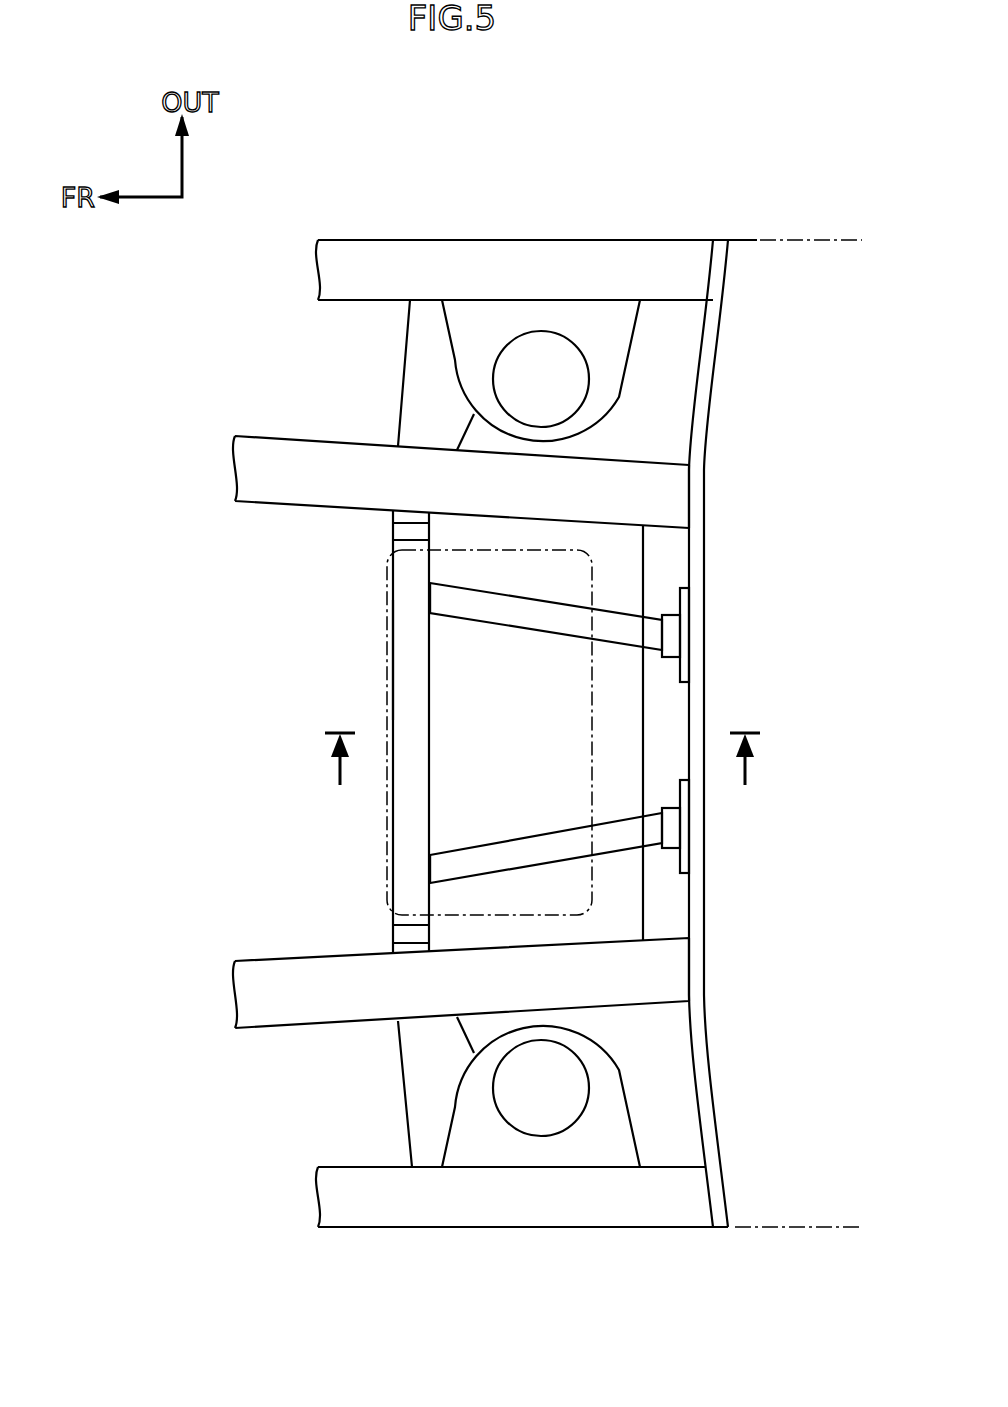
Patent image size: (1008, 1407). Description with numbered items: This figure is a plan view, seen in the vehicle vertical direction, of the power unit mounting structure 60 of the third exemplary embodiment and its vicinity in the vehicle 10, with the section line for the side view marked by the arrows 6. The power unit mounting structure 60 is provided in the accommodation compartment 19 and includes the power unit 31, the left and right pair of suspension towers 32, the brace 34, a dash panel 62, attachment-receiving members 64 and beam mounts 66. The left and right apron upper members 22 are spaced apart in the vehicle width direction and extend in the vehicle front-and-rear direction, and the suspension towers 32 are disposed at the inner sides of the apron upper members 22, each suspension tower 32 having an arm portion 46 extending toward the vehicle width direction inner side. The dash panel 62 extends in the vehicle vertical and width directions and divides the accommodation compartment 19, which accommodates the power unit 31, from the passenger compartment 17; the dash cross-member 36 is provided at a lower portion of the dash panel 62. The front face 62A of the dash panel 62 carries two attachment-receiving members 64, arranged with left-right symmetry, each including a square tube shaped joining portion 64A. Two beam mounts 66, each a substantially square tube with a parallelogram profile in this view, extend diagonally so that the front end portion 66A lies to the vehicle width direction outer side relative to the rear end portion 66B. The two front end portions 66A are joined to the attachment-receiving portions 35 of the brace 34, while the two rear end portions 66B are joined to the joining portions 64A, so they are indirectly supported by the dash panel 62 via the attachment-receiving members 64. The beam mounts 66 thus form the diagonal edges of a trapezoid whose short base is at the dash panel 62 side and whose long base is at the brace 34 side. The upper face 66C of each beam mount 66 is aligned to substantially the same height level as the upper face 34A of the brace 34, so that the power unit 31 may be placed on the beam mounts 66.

The vehicle 10 is at (738, 172).
The passenger compartment 17 is at (778, 683).
The accommodation compartment 19 is at (618, 903).
The apron upper member 22 is at (529, 236).
The power unit 31 is at (595, 577).
The suspension tower 32 is at (630, 356).
The brace 34 is at (391, 713).
The upper face 34A is at (400, 660).
The attachment-receiving portion 35 is at (432, 598).
The dash cross-member 36 is at (641, 547).
The arm portion 46 is at (398, 369).
The power unit mounting structure 60 is at (335, 602).
The dash panel 62 is at (710, 379).
The front face 62A is at (689, 980).
The attachment-receiving member 64 is at (692, 731).
The joining portion 64A is at (660, 613).
The beam mount 66 is at (513, 630).
The front end portion 66A is at (431, 582).
The rear end portion 66B is at (623, 610).
The upper face 66C is at (533, 612).
The section line 6 is at (542, 777).